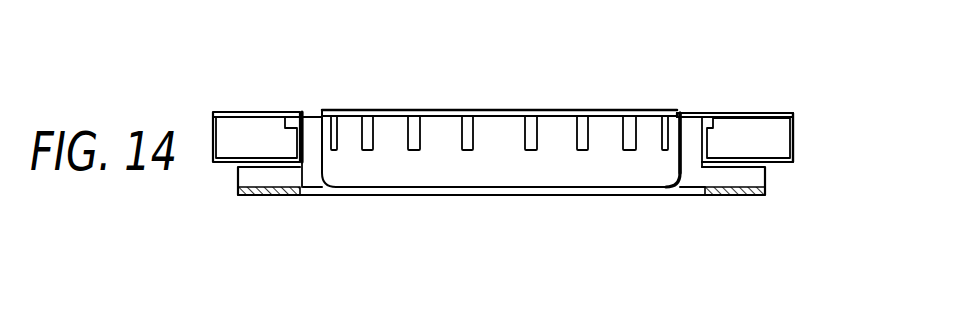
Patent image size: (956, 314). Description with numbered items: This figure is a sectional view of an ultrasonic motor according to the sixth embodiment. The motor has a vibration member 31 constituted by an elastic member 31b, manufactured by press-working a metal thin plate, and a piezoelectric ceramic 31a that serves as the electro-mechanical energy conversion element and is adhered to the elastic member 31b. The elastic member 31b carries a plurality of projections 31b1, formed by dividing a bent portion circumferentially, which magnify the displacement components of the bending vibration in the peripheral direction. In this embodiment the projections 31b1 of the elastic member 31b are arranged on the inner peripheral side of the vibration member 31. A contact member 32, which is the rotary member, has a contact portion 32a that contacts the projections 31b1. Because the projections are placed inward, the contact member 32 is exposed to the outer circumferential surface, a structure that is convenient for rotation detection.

The vibration member 31 is at (383, 170).
The piezoelectric ceramic 31a is at (747, 197).
The elastic member 31b is at (688, 175).
The projections 31b1 is at (603, 122).
The contact member 32 is at (760, 140).
The contact portion 32a is at (687, 115).